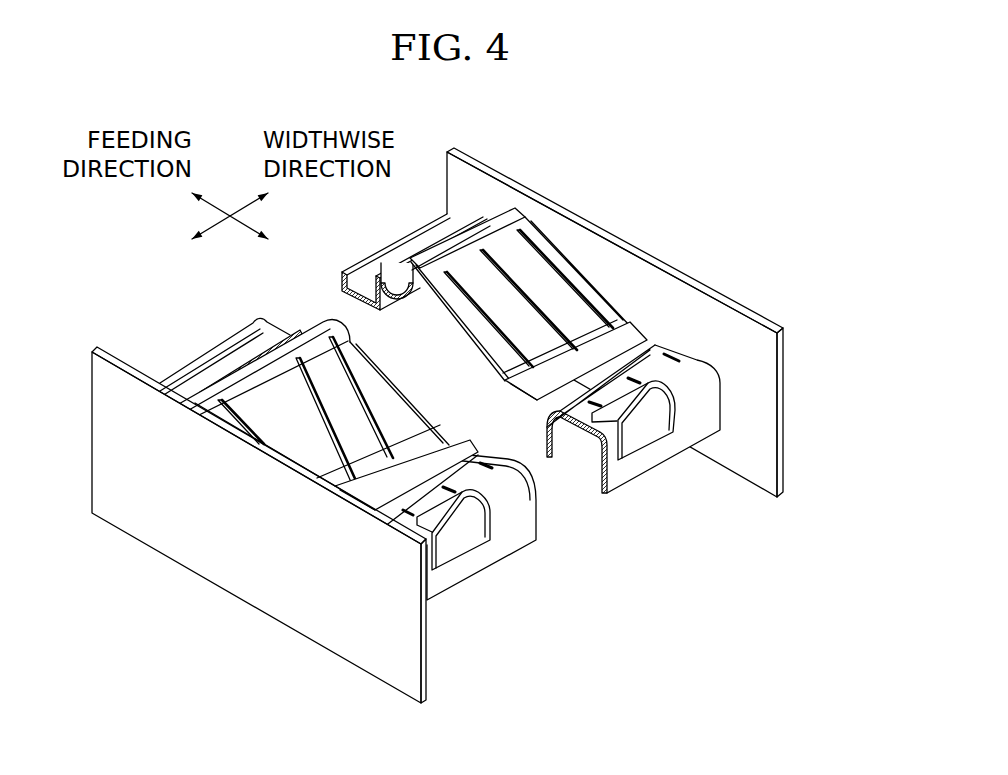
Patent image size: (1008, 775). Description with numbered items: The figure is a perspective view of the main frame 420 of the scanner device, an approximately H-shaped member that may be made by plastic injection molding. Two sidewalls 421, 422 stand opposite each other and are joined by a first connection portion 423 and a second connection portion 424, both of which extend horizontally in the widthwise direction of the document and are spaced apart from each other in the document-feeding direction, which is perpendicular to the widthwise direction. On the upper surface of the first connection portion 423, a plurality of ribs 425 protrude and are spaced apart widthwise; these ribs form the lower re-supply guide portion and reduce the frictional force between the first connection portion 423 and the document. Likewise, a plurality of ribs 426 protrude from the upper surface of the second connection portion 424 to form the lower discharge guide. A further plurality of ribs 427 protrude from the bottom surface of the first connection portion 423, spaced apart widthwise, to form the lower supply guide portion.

The main frame 420 is at (683, 183).
The sidewall 421 is at (425, 670).
The sidewall 422 is at (778, 473).
The first connection portion 423 is at (510, 212).
The second connection portion 424 is at (650, 467).
The ribs 425 is at (527, 297).
The ribs 426 is at (637, 377).
The ribs 427 is at (342, 291).